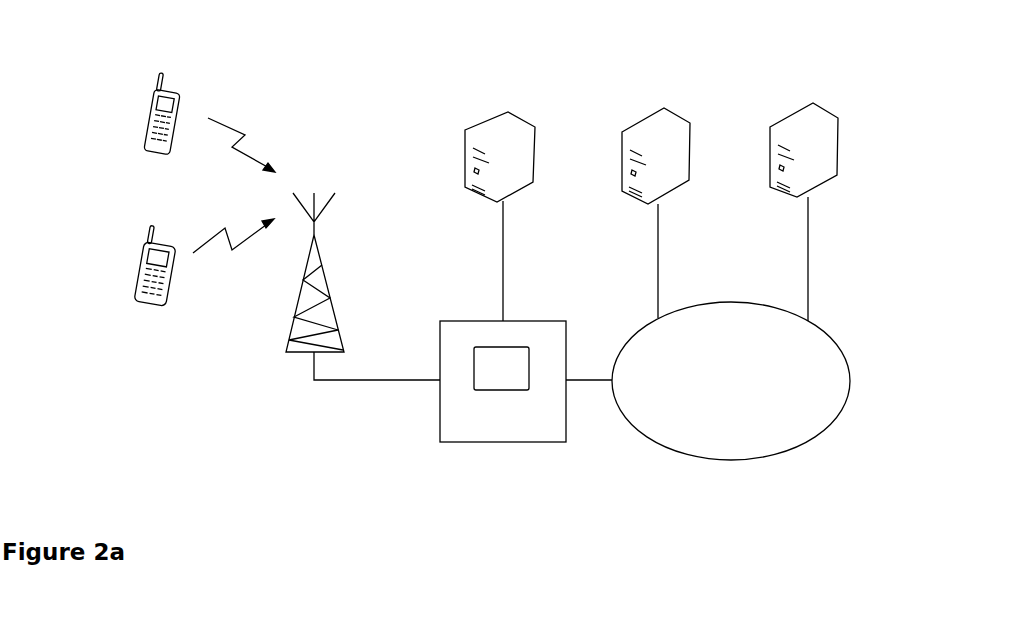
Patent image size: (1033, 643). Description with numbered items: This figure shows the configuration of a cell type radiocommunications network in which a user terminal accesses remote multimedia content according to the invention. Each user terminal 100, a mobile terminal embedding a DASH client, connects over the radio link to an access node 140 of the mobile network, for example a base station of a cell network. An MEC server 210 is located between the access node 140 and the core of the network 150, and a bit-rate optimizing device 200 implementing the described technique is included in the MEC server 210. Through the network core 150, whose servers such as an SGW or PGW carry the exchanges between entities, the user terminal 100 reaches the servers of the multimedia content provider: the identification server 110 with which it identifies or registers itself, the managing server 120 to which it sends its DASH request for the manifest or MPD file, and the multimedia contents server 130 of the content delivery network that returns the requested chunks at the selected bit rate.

The user terminal 100 is at (147, 150).
The identification server 110 is at (501, 110).
The managing server 120 is at (655, 108).
The multimedia contents server 130 is at (798, 105).
The access node 140 is at (288, 352).
The network core 150 is at (692, 455).
The bit-rate optimizing device 200 is at (508, 390).
The MEC server 210 is at (440, 427).